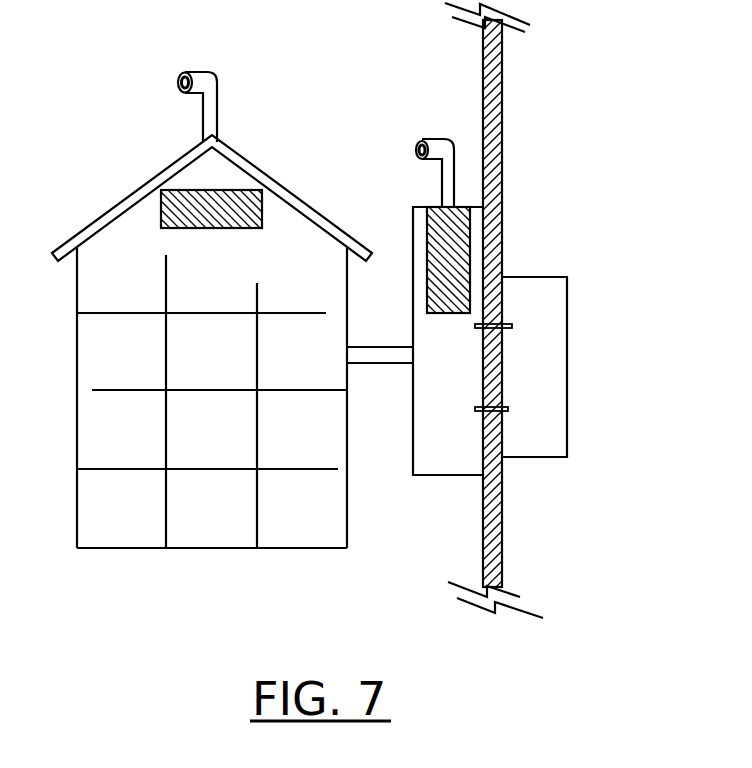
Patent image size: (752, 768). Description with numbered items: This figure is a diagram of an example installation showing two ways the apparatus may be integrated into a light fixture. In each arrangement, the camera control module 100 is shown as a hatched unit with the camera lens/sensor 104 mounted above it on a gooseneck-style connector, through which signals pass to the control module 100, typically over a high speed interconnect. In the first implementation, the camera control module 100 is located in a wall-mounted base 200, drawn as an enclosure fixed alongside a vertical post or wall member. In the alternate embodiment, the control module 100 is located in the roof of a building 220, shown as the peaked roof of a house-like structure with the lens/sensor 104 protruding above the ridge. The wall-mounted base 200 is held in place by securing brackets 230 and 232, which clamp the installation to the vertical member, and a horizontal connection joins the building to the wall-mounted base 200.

The camera control module 100 is at (200, 230).
The camera lens/sensor 104 is at (187, 73).
The wall-mounted base 200 is at (443, 477).
The roof of a building 220 is at (102, 218).
The securing bracket 230 is at (513, 327).
The securing bracket 232 is at (510, 410).